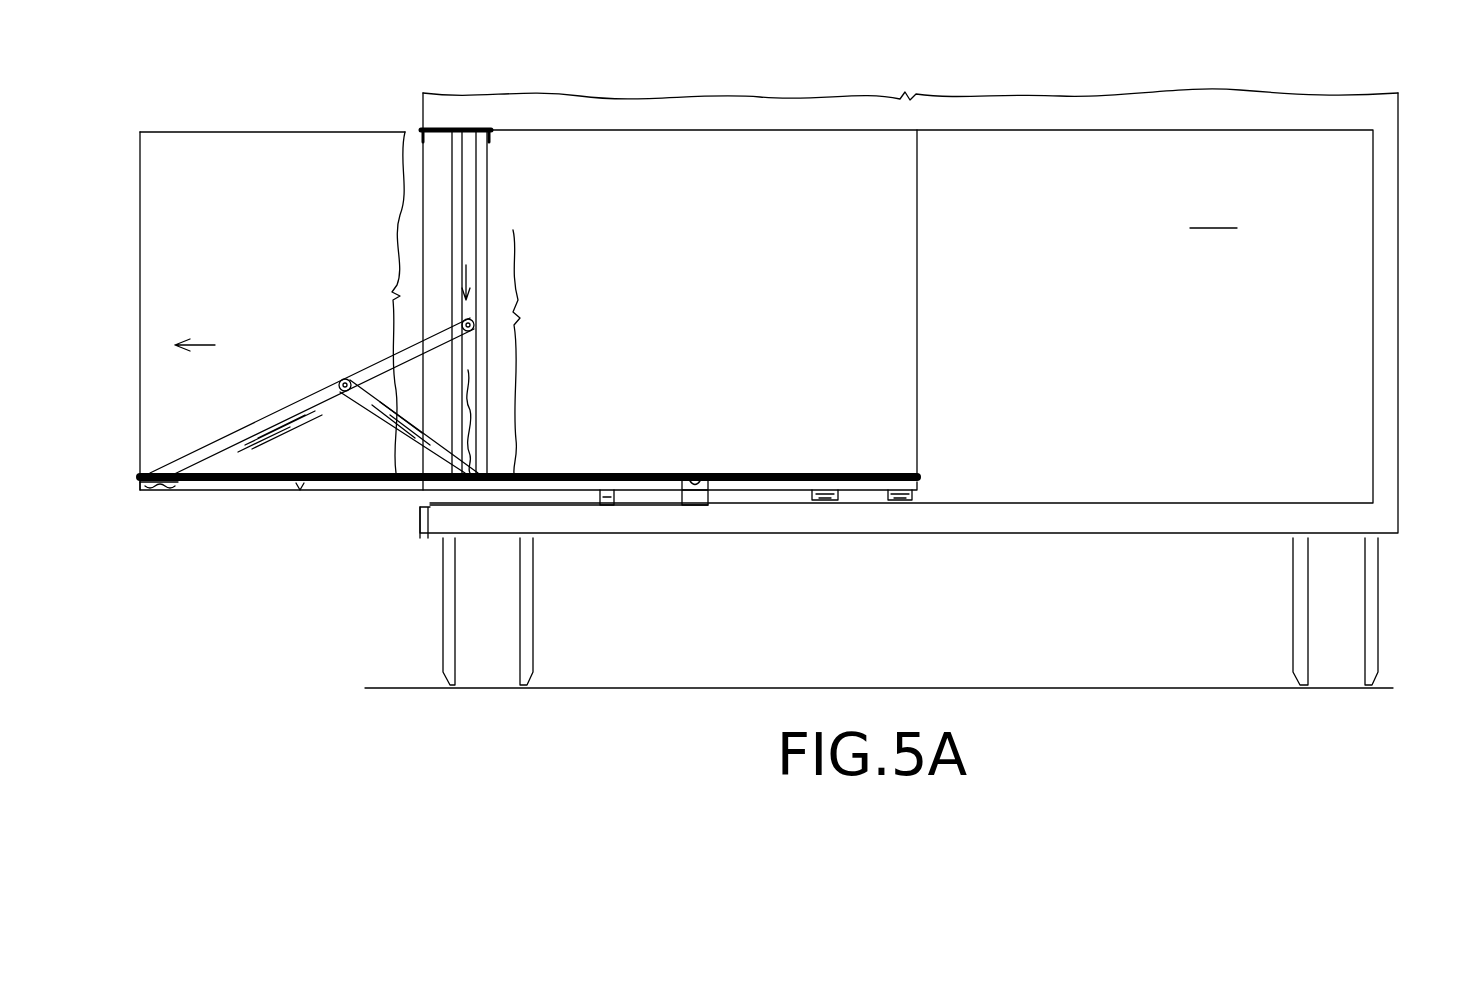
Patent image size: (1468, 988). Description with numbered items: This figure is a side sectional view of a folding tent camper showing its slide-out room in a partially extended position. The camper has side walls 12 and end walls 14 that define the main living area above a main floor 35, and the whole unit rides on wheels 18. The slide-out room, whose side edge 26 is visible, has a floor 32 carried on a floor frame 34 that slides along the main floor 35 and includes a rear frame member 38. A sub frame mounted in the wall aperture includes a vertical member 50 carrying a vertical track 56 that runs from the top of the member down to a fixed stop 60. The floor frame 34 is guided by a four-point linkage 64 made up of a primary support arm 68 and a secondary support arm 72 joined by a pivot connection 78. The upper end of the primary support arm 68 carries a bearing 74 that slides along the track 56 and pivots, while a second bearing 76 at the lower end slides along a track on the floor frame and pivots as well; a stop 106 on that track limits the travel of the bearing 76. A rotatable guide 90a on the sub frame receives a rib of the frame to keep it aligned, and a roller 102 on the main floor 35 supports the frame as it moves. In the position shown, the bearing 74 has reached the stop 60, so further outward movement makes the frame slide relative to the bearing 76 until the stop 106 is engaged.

The side wall 12 is at (1383, 262).
The end wall 14 is at (898, 316).
The wheel 18 is at (485, 597).
The side edge 26 is at (827, 156).
The floor 32 is at (769, 470).
The floor frame 34 is at (802, 495).
The main floor 35 is at (1058, 505).
The rear frame member 38 is at (905, 490).
The vertical member 50 is at (438, 157).
The track 56 is at (470, 175).
The fixed stop 60 is at (470, 374).
The four-point linkage 64 is at (299, 383).
The primary support arm 68 is at (236, 440).
The secondary support arm 72 is at (385, 420).
The bearing 74 is at (473, 320).
The second bearing 76 is at (150, 493).
The pivot connection 78 is at (347, 378).
The rotatable guide 90a is at (708, 500).
The roller 102 is at (612, 500).
The stop 106 is at (300, 492).